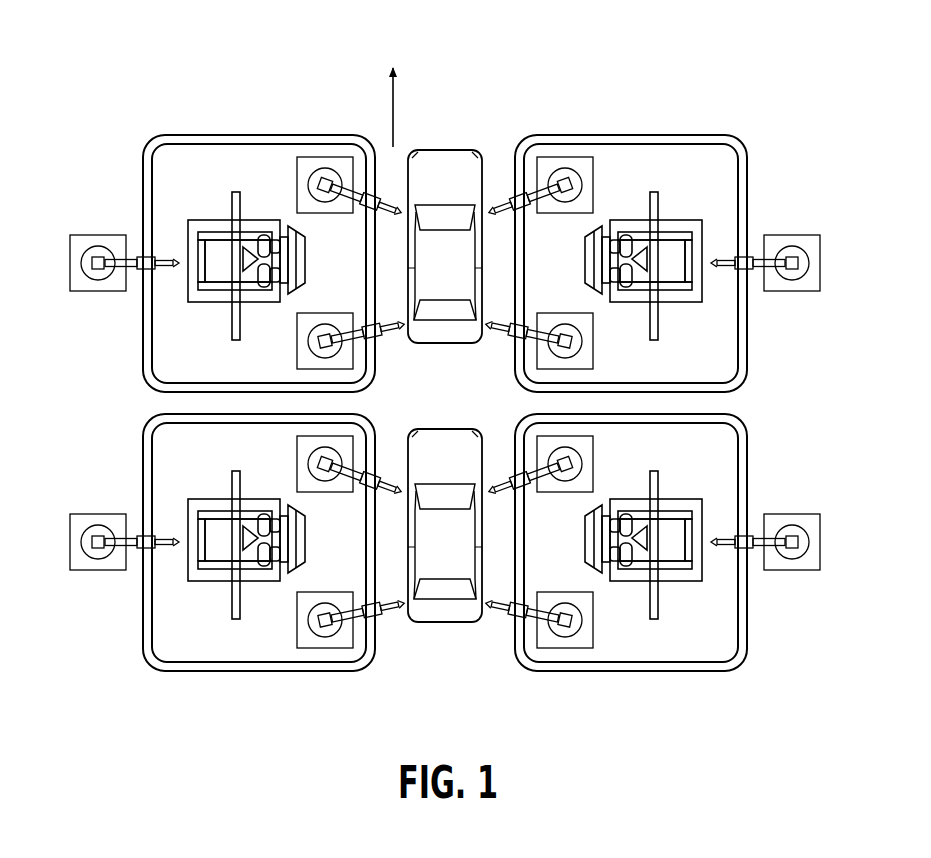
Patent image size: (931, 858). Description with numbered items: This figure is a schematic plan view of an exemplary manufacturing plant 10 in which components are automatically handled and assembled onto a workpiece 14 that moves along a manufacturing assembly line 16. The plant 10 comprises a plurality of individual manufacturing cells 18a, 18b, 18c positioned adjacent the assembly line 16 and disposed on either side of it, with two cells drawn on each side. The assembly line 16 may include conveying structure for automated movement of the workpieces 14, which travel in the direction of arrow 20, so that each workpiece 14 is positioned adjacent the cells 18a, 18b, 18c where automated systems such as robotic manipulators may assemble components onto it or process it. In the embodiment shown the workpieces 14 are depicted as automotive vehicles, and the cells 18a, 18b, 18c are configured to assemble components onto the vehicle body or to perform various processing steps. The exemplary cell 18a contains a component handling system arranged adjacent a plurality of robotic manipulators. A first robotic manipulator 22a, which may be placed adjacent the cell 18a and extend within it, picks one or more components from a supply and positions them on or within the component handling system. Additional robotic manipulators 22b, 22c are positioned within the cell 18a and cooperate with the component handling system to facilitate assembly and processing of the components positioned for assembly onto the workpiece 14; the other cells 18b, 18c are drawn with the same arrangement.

The manufacturing plant 10 is at (120, 50).
The workpiece 14 is at (454, 150).
The manufacturing assembly line 16 is at (504, 139).
The manufacturing cell 18a is at (144, 172).
The manufacturing cell 18b is at (141, 647).
The manufacturing cell 18c is at (736, 138).
The arrow 20 is at (396, 98).
The first robotic manipulator 22a is at (97, 292).
The robotic manipulator 22b is at (300, 180).
The robotic manipulator 22c is at (333, 371).